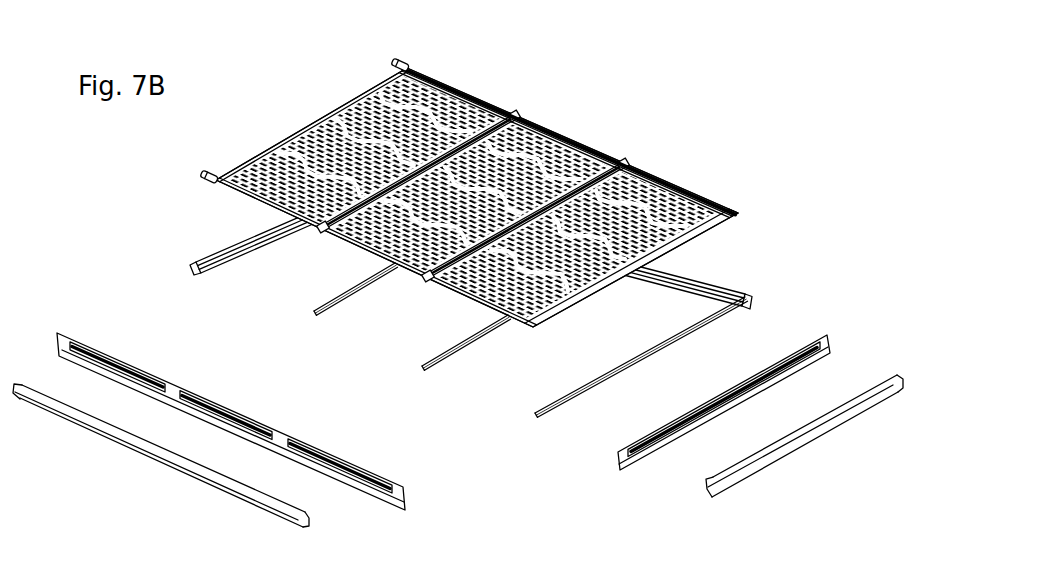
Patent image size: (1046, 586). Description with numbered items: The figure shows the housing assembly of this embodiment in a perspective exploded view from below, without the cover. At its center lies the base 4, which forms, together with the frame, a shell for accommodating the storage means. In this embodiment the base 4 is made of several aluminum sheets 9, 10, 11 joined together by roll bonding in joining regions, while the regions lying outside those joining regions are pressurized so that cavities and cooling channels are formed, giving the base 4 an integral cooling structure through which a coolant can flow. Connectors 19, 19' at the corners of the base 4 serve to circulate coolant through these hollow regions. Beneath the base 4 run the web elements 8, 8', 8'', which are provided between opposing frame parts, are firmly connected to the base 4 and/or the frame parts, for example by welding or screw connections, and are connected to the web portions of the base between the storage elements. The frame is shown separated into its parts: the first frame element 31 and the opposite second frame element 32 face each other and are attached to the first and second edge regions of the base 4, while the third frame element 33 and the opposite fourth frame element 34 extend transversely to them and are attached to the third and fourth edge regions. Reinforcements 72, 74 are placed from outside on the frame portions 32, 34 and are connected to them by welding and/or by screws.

The base 4 is at (583, 109).
The web element 8 is at (641, 377).
The web element 8' is at (466, 364).
The cross bar 8'' is at (356, 312).
The aluminum sheet 9 is at (698, 183).
The aluminum sheet 10 is at (598, 147).
The aluminum sheet 11 is at (476, 93).
The connector 19 is at (216, 147).
The connector 19' is at (413, 43).
The first frame element 31 is at (713, 287).
The second frame element 32 is at (382, 473).
The third frame element 33 is at (212, 240).
The fourth frame element 34 is at (632, 463).
The reinforcement 72 is at (163, 473).
The reinforcement 74 is at (738, 480).